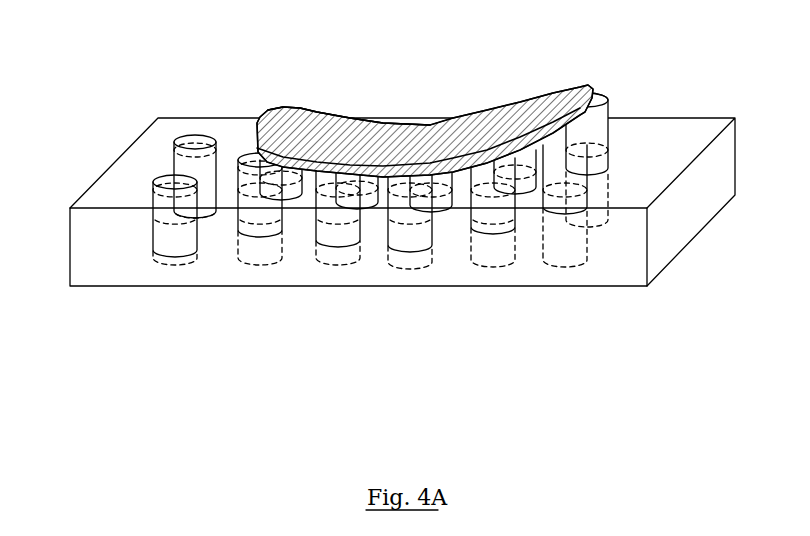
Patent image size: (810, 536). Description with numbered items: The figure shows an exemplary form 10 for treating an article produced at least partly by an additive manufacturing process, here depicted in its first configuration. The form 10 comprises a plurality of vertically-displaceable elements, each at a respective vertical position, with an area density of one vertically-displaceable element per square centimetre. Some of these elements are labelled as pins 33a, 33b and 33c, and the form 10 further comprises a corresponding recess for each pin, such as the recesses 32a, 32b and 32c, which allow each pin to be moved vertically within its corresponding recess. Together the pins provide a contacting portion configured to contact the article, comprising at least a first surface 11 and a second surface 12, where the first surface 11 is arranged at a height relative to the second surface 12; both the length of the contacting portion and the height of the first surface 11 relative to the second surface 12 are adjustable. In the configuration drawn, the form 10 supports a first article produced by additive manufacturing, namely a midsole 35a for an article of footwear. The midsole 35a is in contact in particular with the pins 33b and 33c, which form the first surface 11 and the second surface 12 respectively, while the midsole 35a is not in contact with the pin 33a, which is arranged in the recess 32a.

The form 10 is at (70, 63).
The first surface 11 is at (277, 108).
The second surface 12 is at (431, 122).
The recess 32a is at (208, 217).
The recess 32b is at (288, 217).
The recess 32c is at (597, 193).
The vertically-displaceable element 33a is at (185, 140).
The vertically-displaceable element 33b is at (265, 118).
The vertically-displaceable element 33c is at (423, 122).
The midsole 35a is at (487, 113).